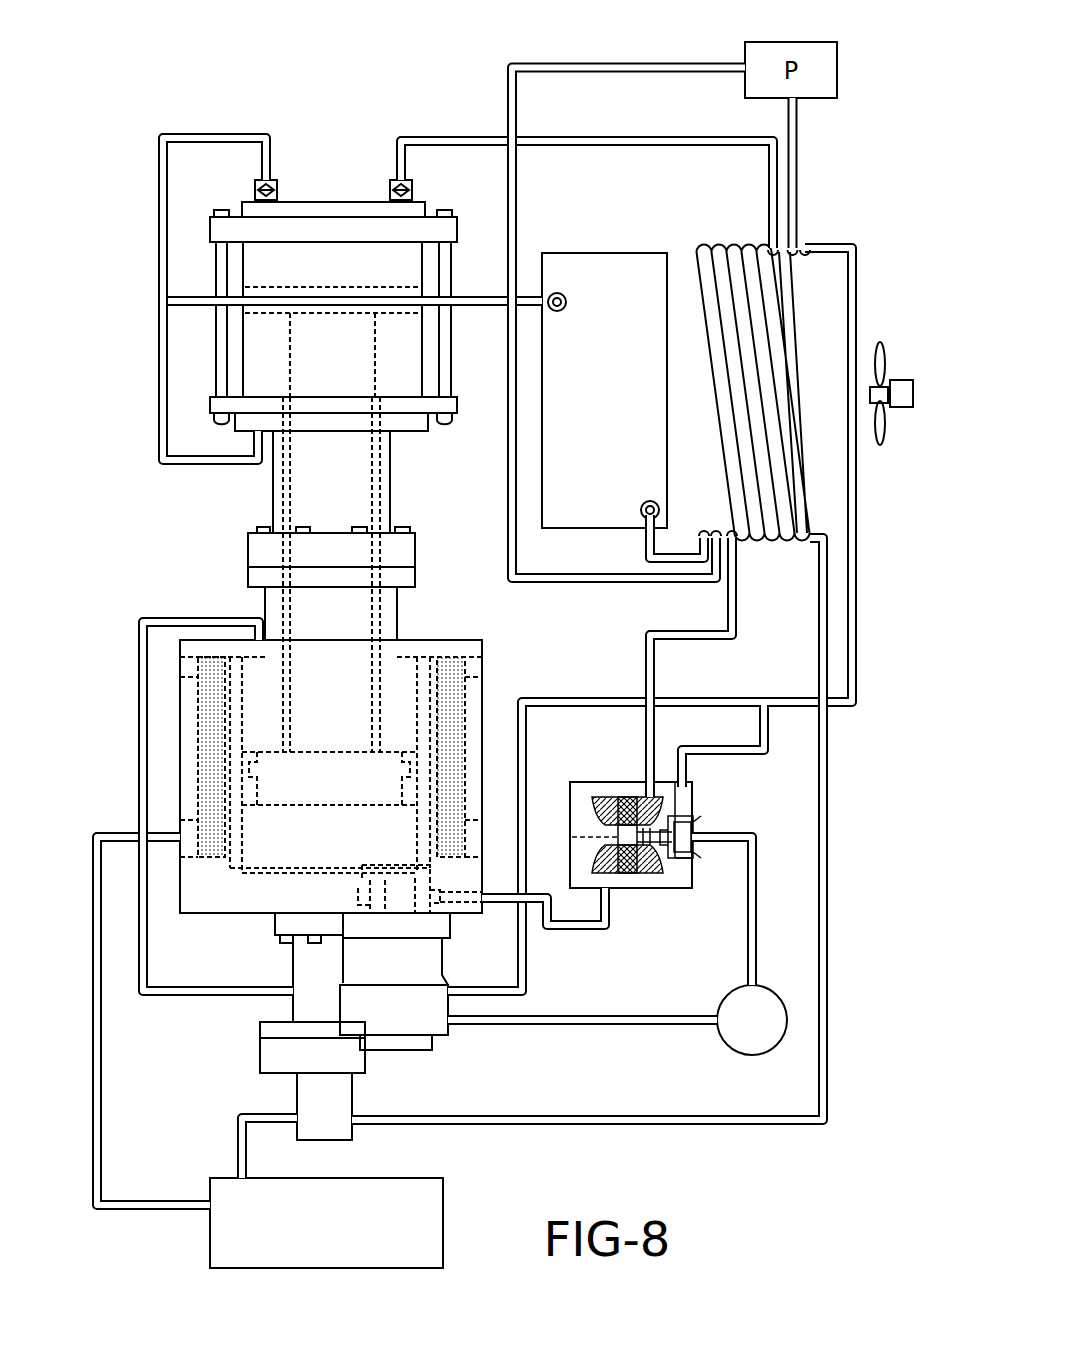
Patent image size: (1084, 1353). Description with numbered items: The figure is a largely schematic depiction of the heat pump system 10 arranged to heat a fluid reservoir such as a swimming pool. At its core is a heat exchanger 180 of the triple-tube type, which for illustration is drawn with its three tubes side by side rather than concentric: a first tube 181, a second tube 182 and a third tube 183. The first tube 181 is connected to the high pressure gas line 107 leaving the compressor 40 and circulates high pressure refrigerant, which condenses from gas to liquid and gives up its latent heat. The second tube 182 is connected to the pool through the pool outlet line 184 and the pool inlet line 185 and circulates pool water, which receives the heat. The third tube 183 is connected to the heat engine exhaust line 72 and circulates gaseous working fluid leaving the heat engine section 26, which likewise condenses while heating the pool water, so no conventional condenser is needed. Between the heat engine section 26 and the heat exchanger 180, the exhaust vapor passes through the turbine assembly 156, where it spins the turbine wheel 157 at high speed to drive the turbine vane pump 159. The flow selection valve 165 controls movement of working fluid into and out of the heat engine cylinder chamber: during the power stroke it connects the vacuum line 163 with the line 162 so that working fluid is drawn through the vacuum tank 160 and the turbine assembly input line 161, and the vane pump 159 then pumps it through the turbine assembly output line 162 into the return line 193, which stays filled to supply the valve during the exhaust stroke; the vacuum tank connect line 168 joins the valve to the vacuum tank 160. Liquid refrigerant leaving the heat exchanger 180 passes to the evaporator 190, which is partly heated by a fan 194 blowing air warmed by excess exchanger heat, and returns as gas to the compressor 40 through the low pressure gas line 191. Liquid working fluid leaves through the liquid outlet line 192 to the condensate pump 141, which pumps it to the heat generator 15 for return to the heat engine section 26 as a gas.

The heat pump system 10 is at (142, 548).
The heat generator 15 is at (312, 1241).
The heat engine section 26 is at (178, 729).
The compressor 40 is at (200, 258).
The heat engine exhaust line 72 is at (645, 745).
The high pressure gas line 107 is at (440, 135).
The condensate pump 141 is at (345, 1122).
The turbine assembly 156 is at (655, 882).
The turbine wheel 157 is at (624, 878).
The turbine vane pump 159 is at (698, 820).
The vacuum tank 160 is at (735, 1037).
The turbine assembly input line 161 is at (752, 947).
The turbine assembly output line 162 is at (858, 640).
The vacuum line 163 is at (178, 617).
The flow selection valve 165 is at (425, 1020).
The vacuum tank connect line 168 is at (604, 1027).
The heat exchanger 180 is at (700, 248).
The first tube 181 is at (778, 246).
The second tube 182 is at (795, 245).
The third tube 183 is at (806, 247).
The pool outlet line 184 is at (797, 125).
The pool inlet line 185 is at (645, 63).
The evaporator 190 is at (588, 361).
The low pressure gas line 191 is at (473, 306).
The liquid outlet line 192 is at (828, 860).
The return line 193 is at (560, 697).
The fan 194 is at (900, 385).